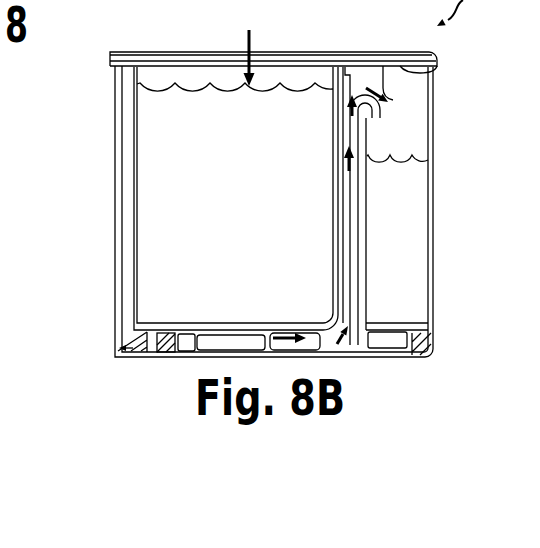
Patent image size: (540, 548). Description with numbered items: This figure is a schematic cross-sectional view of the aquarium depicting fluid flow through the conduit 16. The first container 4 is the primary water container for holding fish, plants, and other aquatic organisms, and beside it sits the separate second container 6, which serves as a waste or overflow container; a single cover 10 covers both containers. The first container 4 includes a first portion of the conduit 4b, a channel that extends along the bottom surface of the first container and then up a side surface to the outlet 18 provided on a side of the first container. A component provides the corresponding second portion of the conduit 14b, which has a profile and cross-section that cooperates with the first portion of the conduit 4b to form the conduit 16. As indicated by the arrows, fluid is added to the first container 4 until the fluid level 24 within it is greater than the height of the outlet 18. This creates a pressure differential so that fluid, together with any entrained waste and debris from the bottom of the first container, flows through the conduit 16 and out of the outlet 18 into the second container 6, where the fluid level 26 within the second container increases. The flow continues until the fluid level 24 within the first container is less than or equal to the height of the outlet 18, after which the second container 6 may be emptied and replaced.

The cover 10 is at (200, 53).
The fluid level 24 is at (132, 89).
The first container 4 is at (120, 170).
The second portion of the conduit 14b is at (340, 262).
The conduit 16 is at (353, 213).
The first portion of the conduit 4b is at (362, 257).
The second container 6 is at (437, 270).
The outlet 18 is at (397, 113).
The fluid level 26 is at (395, 160).